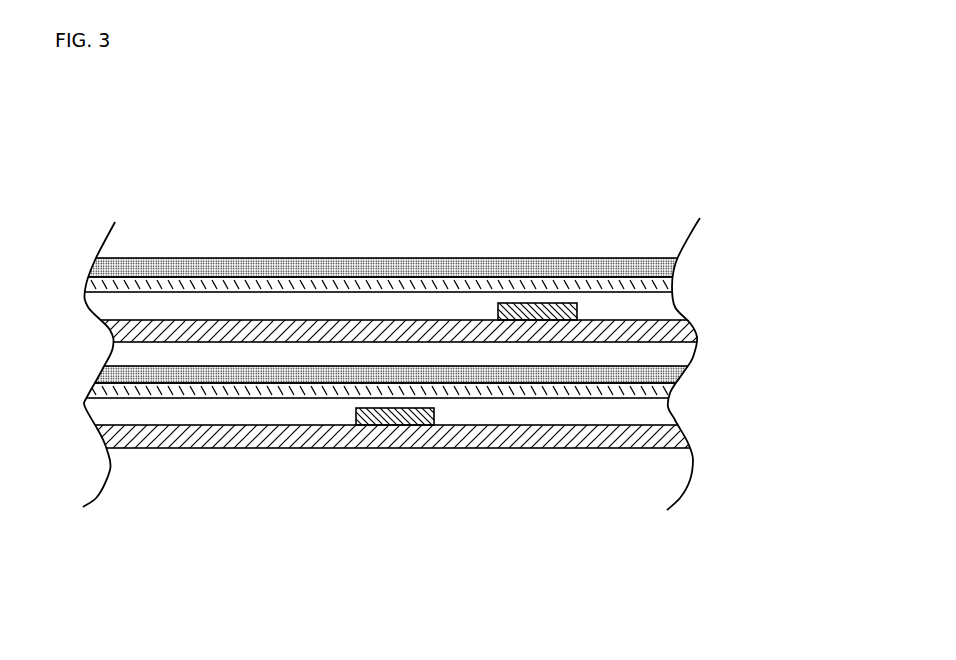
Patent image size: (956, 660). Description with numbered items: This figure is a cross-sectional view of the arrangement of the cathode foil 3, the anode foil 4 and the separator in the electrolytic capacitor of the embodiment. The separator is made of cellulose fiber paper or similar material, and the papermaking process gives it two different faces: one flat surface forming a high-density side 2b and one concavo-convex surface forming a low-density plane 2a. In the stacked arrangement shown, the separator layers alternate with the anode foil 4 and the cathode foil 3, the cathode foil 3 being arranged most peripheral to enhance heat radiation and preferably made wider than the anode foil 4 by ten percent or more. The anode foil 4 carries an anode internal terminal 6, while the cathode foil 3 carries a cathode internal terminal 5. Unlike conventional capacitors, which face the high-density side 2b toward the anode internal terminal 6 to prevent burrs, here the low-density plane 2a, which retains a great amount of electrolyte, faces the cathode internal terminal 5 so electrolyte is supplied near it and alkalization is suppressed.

The low-density plane 2a is at (276, 288).
The high-density side 2b is at (222, 560).
The cathode foil 3 is at (535, 443).
The anode foil 4 is at (657, 333).
The cathode internal terminal 5 is at (410, 423).
The anode internal terminal 6 is at (527, 308).